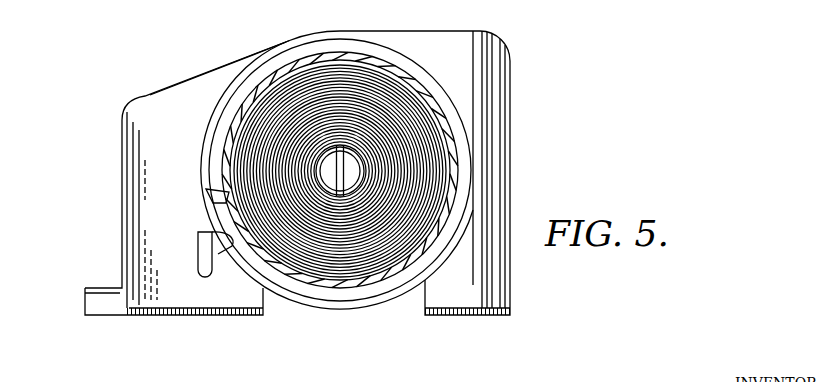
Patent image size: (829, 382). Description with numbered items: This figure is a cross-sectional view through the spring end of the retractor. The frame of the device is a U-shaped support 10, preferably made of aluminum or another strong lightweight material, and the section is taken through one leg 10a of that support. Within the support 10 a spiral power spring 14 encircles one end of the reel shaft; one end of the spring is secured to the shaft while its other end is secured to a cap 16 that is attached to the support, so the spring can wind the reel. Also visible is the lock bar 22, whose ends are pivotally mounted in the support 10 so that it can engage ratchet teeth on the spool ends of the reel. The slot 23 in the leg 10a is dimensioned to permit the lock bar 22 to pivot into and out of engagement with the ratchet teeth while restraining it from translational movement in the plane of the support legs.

The U-shaped support 10 is at (110, 127).
The leg of the support 10a is at (178, 96).
The spiral power spring 14 is at (444, 163).
The cap 16 is at (427, 246).
The lock bar 22 is at (205, 240).
The slot 23 is at (218, 254).